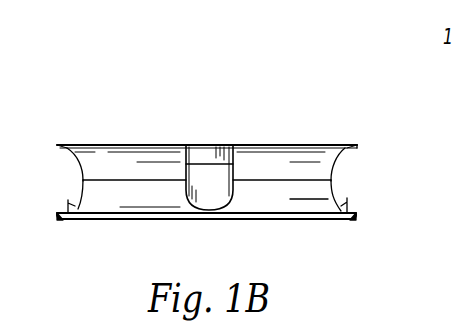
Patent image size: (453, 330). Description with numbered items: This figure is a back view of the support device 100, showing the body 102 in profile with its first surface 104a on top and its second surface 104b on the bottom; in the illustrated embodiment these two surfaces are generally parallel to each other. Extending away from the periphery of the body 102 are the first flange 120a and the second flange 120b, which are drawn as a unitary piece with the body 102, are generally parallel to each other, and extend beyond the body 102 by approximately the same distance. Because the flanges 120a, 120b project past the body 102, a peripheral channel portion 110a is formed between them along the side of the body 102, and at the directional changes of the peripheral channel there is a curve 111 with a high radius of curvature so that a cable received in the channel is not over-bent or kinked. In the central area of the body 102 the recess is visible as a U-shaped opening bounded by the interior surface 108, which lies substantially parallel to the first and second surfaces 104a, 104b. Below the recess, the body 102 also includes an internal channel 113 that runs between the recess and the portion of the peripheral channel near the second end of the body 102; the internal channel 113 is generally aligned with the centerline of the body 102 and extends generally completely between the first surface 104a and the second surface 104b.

The support device 100 is at (283, 84).
The body 102 is at (122, 145).
The first surface 104a is at (306, 145).
The second surface 104b is at (290, 222).
The interior surface 108 is at (210, 163).
The side wall 110a is at (318, 190).
The curve 111 is at (80, 183).
The internal channel 113 is at (201, 212).
The first flange 120a is at (70, 145).
The second flange 120b is at (90, 222).